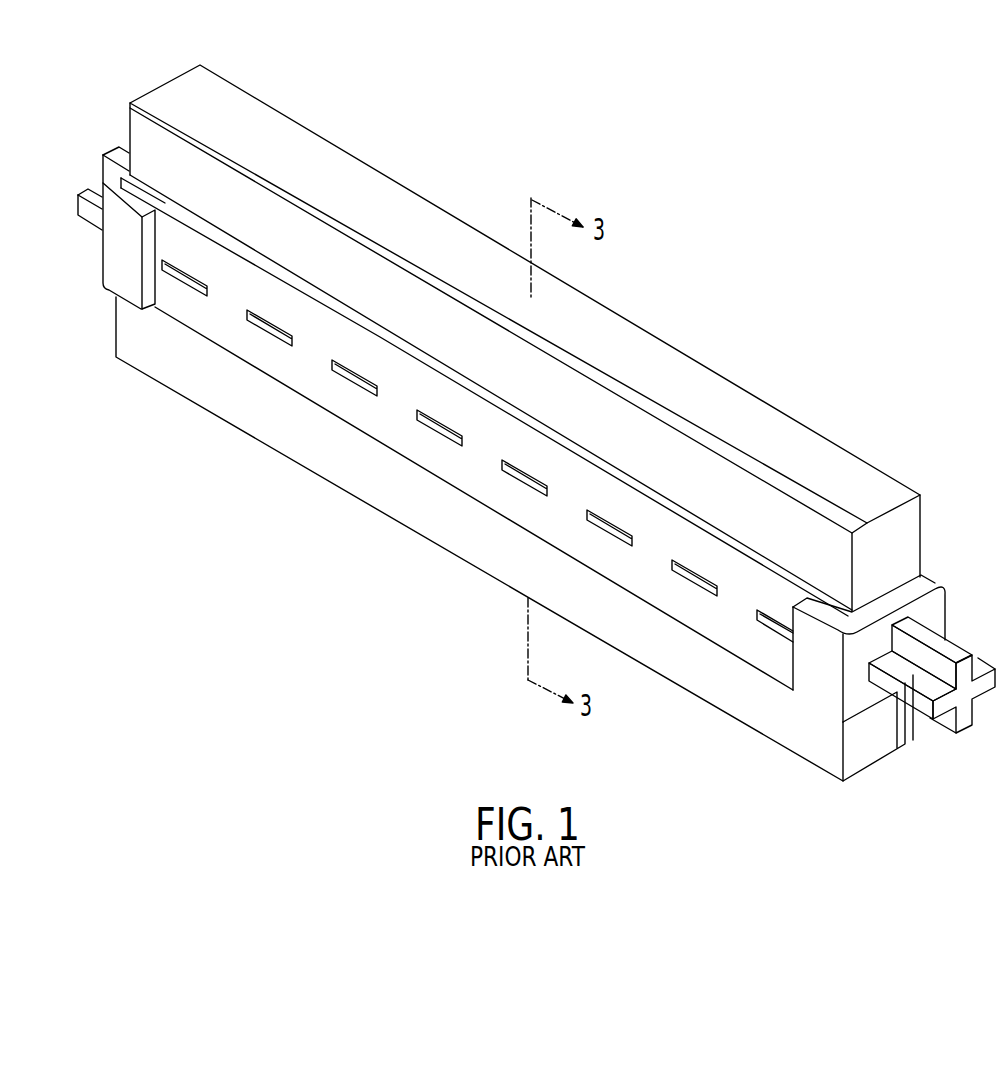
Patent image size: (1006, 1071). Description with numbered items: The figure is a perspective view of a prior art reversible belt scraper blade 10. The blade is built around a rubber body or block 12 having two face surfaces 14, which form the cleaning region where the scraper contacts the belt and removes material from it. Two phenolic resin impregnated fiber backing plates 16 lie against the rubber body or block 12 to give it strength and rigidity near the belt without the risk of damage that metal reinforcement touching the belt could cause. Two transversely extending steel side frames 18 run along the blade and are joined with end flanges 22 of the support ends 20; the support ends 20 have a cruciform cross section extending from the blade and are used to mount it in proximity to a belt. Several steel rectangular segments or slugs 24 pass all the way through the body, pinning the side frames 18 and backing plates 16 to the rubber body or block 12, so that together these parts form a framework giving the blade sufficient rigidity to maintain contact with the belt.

The reversible belt scraper blade 10 is at (300, 370).
The rubber body or block 12 is at (905, 535).
The face surfaces 14 is at (815, 453).
The phenolic resin impregnated fiber backing plates 16 is at (680, 410).
The transversely extending steel side frames 18 is at (553, 527).
The support ends 20 is at (95, 198).
The end flanges 22 is at (807, 688).
The steel rectangular segments or slugs 24 is at (437, 432).